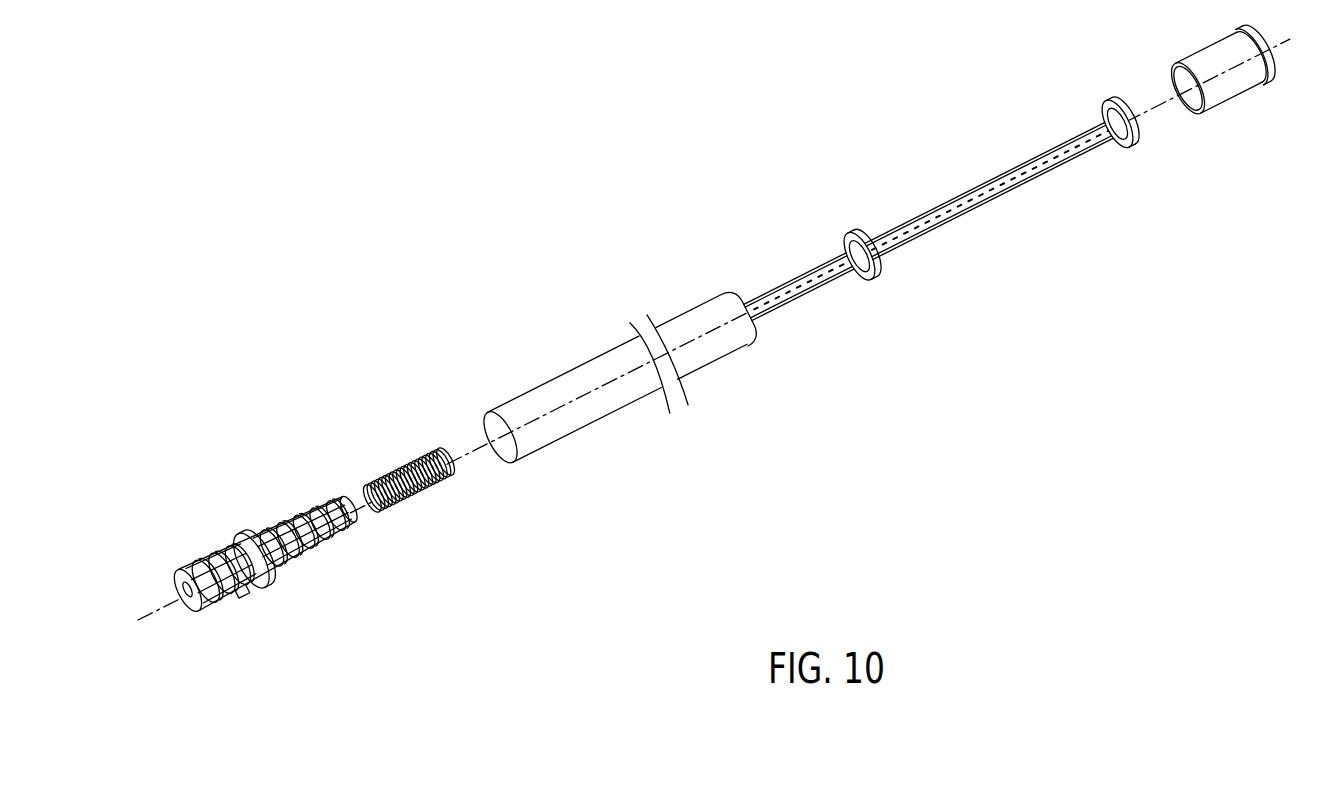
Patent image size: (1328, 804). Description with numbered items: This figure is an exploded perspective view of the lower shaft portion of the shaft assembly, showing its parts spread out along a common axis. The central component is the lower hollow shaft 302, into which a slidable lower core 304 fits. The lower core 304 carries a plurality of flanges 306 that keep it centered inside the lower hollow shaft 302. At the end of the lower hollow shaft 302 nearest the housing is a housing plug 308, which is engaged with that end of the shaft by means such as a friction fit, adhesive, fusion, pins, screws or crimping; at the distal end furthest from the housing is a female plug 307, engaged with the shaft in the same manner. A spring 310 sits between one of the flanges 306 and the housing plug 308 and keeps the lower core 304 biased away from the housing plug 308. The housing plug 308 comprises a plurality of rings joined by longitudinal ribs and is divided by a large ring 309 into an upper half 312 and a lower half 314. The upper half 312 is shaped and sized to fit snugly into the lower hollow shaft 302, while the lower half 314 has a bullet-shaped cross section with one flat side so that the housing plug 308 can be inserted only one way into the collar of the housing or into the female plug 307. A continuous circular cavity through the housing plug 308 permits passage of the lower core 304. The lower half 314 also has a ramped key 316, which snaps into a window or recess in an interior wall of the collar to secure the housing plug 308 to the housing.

The lower hollow shaft 302 is at (585, 412).
The lower core 304 is at (818, 312).
The flanges 306 is at (877, 267).
The female plug 307 is at (1237, 107).
The housing plug 308 is at (262, 612).
The large ring 309 is at (242, 530).
The spring 310 is at (420, 502).
The upper half 312 is at (300, 577).
The lower half 314 is at (182, 558).
The ramped key 316 is at (245, 597).